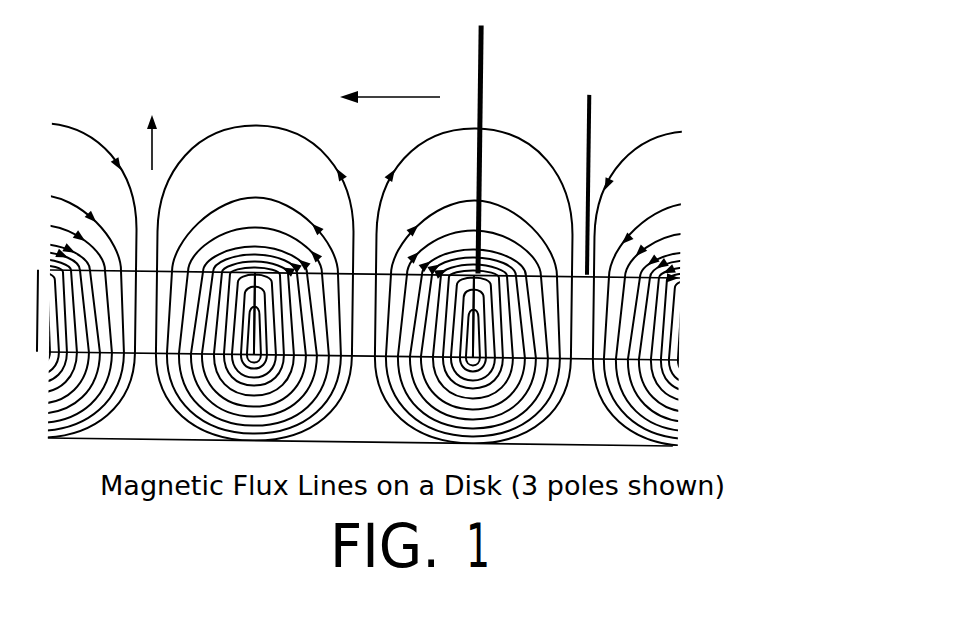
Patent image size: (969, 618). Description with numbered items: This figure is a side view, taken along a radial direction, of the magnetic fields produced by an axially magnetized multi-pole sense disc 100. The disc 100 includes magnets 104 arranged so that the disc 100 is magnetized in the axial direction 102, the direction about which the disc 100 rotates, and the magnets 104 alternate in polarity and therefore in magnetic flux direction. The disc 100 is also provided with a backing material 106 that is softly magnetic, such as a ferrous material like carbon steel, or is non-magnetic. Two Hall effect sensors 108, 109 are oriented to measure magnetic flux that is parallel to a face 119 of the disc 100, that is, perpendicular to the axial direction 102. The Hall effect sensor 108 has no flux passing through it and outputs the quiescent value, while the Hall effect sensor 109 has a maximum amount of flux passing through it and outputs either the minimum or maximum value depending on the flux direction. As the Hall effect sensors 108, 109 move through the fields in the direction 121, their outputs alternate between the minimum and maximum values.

The sense disc 100 is at (735, 328).
The axial direction 102 is at (140, 157).
The magnets 104 is at (470, 347).
The backing material 106 is at (580, 430).
The Hall effect sensor 108 is at (592, 118).
The Hall effect sensor 109 is at (485, 30).
The face 119 is at (652, 248).
The direction 121 is at (390, 86).